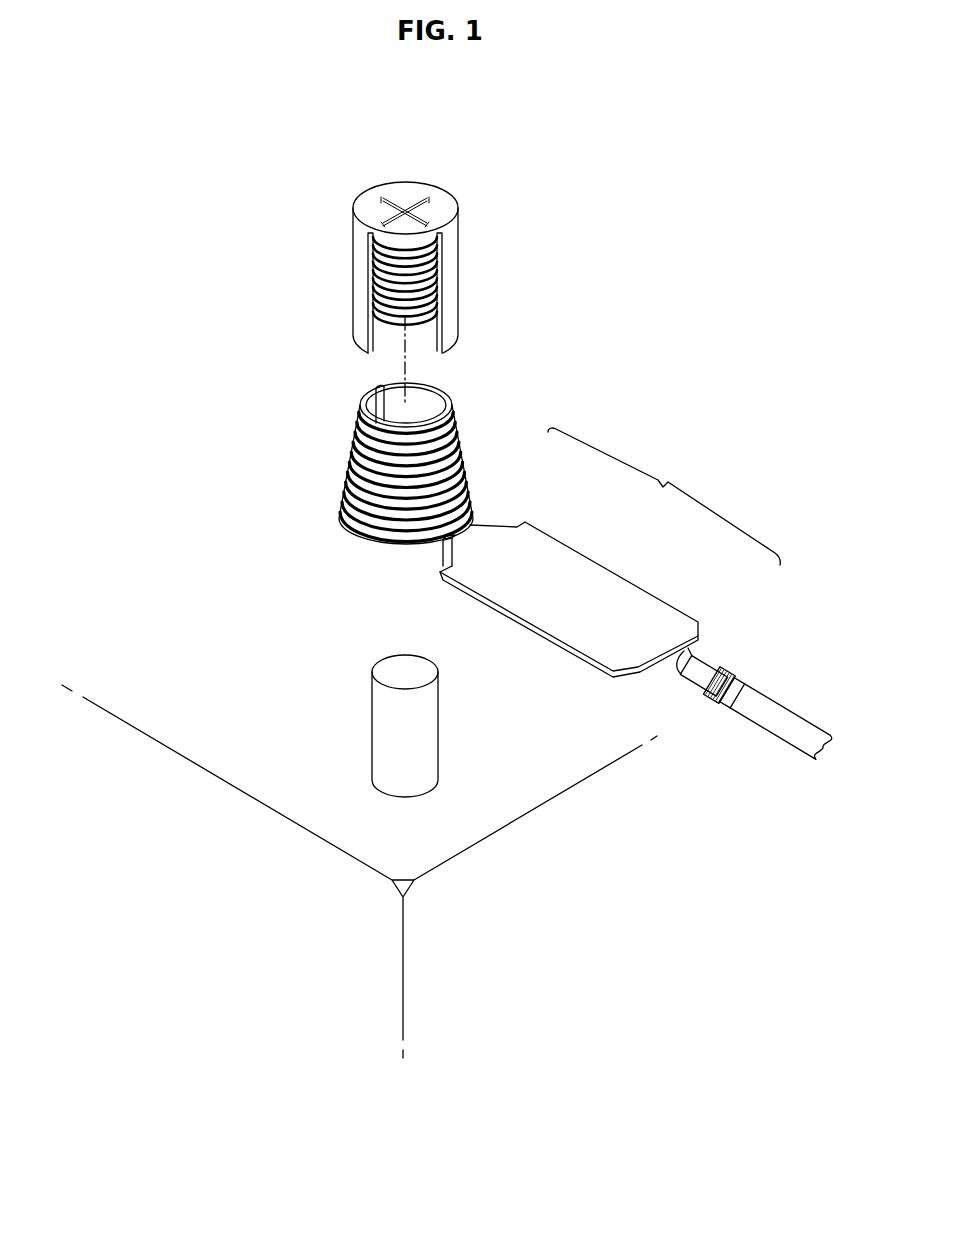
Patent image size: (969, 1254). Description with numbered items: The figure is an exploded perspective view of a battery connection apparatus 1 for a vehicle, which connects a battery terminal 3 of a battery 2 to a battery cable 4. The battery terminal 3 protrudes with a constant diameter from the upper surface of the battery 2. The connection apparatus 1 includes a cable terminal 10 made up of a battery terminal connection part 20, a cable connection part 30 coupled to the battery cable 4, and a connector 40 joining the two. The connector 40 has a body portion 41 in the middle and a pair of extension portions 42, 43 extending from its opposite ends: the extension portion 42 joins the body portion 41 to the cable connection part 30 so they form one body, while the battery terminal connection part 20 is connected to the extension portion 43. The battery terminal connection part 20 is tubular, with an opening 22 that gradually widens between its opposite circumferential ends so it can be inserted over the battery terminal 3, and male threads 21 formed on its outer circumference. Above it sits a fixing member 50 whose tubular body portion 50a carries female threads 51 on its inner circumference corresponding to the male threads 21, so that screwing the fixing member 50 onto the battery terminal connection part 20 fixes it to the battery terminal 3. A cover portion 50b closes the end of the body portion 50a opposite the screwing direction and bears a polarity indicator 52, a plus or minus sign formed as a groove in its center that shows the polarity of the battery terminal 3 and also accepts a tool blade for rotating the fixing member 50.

The battery connection apparatus 1 is at (559, 368).
The battery 2 is at (213, 755).
The battery terminal 3 is at (373, 722).
The battery cable 4 is at (773, 728).
The cable terminal 10 is at (529, 550).
The battery terminal connection part 20 is at (482, 459).
The male threads 21 is at (360, 467).
The opening 22 is at (376, 406).
The cable connection part 30 is at (726, 663).
The connector 40 is at (612, 555).
The body portion 41 is at (550, 618).
The extension portion 42 is at (670, 667).
The extension portion 43 is at (443, 538).
The fixing member 50 is at (482, 243).
The body portion 50a is at (360, 258).
The cover portion 50b is at (368, 203).
The female threads 51 is at (400, 278).
The polarity indicator 52 is at (422, 193).